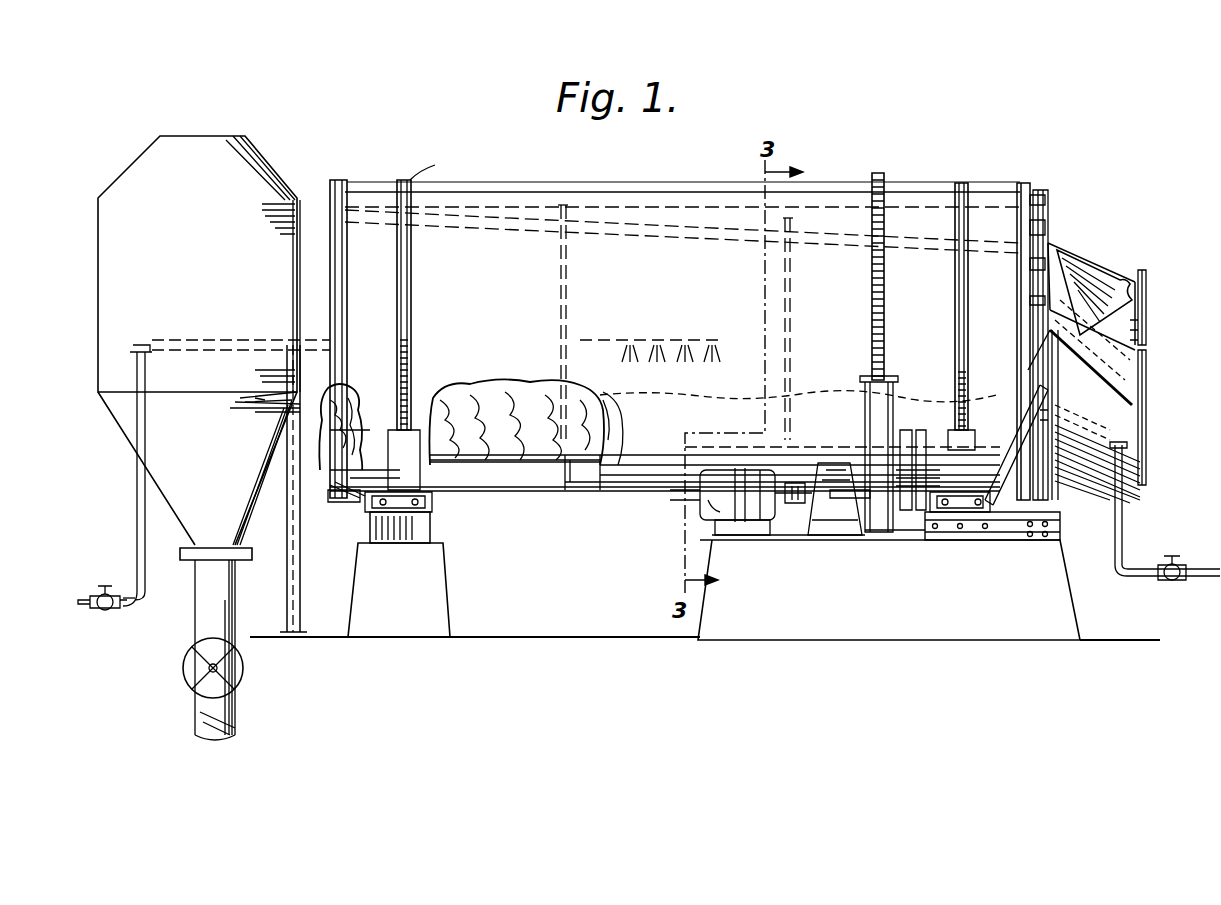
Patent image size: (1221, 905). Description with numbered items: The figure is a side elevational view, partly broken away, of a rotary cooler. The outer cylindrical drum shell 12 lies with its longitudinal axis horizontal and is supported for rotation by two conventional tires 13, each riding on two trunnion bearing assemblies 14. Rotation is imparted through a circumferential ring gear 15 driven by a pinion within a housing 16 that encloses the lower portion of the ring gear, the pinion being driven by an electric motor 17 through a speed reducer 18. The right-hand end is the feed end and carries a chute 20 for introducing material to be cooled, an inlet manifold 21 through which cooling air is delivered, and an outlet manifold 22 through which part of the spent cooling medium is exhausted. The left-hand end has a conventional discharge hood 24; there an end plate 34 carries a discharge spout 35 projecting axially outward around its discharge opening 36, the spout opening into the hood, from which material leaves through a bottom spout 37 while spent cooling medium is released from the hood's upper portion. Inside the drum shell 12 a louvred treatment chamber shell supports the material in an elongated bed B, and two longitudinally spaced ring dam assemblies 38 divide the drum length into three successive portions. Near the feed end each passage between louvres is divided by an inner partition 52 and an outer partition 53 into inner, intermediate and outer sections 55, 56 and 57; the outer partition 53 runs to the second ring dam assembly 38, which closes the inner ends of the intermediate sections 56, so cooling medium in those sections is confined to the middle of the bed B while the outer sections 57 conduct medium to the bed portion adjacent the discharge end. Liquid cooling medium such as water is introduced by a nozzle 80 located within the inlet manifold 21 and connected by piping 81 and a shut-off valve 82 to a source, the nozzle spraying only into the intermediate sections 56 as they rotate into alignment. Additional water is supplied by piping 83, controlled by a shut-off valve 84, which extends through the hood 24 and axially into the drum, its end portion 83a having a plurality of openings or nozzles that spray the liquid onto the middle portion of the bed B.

The drum shell 12 is at (610, 192).
The tires 13 is at (990, 165).
The trunnion bearing assemblies 14 is at (432, 505).
The ring gear 15 is at (886, 180).
The housing 16 is at (862, 412).
The electric motor 17 is at (712, 518).
The speed reducer 18 is at (812, 516).
The chute 20 is at (1080, 262).
The inlet manifold 21 is at (1148, 432).
The outlet manifold 22 is at (1148, 290).
The discharge hood 24 is at (262, 150).
The end plate 34 is at (340, 462).
The discharge spout 35 is at (312, 200).
The discharge opening 36 is at (322, 385).
The bottom spout 37 is at (196, 621).
The ring dam assemblies 38 is at (568, 280).
The inner partition 52 is at (912, 425).
The outer partition 53 is at (904, 470).
The inner sections 55 is at (928, 432).
The intermediate sections 56 is at (590, 475).
The outer sections 57 is at (518, 475).
The nozzle 80 is at (1048, 435).
The piping 81 is at (1124, 515).
The shut-off valve 82 is at (1170, 582).
The piping 83 is at (137, 497).
The end portion of piping 83a is at (612, 340).
The shut-off valve 84 is at (105, 610).
The material bed B is at (498, 410).